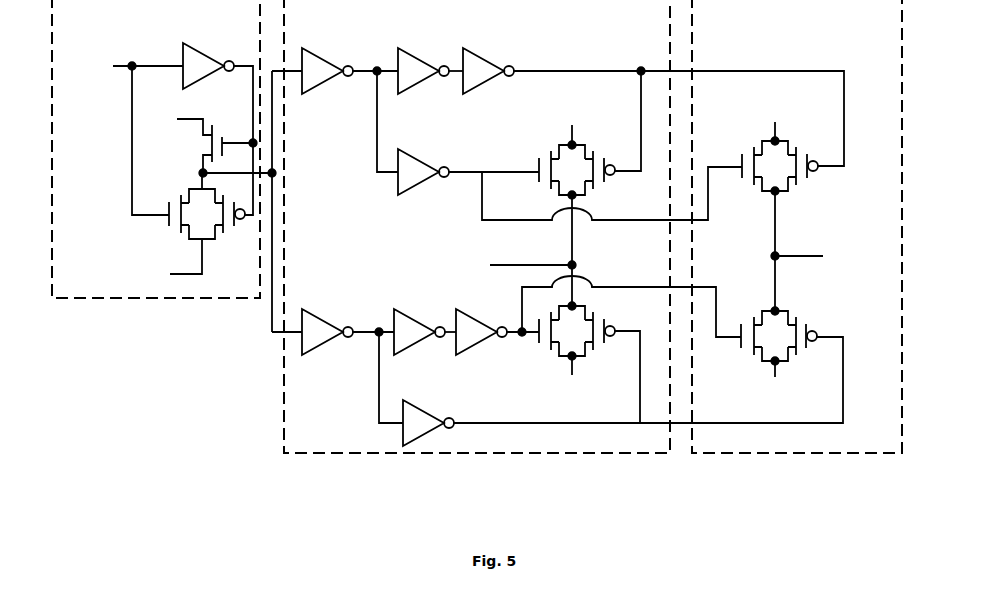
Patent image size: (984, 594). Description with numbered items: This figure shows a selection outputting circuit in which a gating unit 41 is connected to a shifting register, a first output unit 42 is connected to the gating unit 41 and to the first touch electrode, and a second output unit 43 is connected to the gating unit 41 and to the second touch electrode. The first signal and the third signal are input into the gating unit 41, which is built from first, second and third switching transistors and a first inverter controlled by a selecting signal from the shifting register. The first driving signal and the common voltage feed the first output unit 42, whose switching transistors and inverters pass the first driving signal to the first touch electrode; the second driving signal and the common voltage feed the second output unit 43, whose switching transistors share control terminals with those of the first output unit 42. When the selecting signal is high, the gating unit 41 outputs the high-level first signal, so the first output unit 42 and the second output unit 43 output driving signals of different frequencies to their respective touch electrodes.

The gating unit 41 is at (185, 298).
The first output unit 42 is at (485, 453).
The second output unit 43 is at (783, 453).